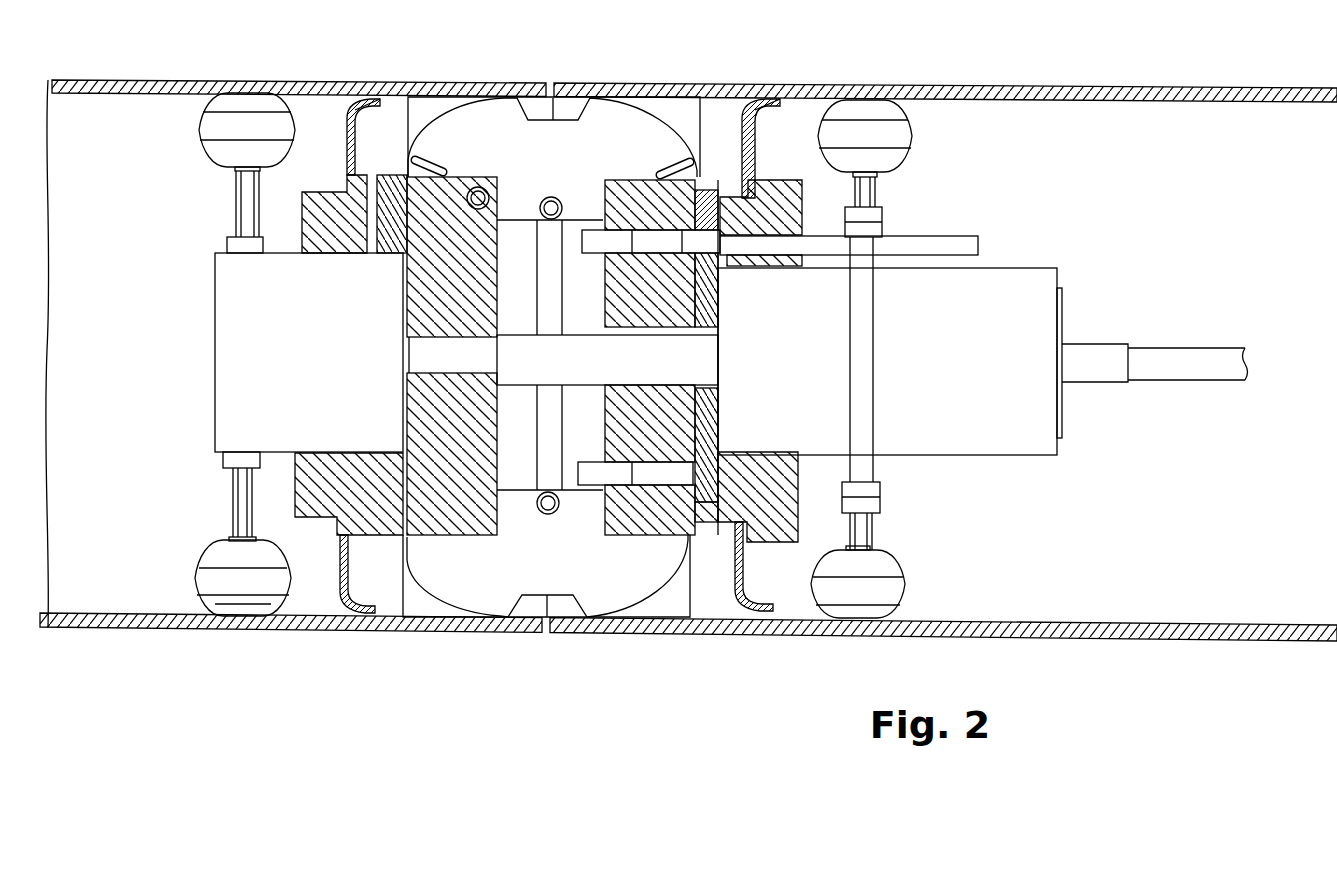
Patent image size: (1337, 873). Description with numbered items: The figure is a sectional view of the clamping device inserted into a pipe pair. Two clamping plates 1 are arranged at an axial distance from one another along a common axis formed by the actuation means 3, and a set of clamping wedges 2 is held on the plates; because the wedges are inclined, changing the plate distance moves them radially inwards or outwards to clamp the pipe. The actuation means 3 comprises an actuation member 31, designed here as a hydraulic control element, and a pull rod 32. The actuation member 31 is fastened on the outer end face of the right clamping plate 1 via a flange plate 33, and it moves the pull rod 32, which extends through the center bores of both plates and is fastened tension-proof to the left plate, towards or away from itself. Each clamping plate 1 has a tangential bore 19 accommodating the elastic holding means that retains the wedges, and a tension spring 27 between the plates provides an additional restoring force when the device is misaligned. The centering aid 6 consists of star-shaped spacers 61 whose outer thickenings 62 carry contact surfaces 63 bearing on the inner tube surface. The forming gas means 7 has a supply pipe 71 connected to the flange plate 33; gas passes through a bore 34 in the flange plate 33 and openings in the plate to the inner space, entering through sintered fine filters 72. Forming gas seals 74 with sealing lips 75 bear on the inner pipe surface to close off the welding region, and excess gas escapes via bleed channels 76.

The clamping plate 1 is at (470, 520).
The clamping wedge 2 is at (433, 100).
The actuation means 3 is at (781, 370).
The centering aid 6 is at (200, 405).
The forming gas means 7 is at (712, 245).
The bore 19 is at (478, 187).
The tension spring 27 is at (537, 425).
The actuation member 31 is at (1035, 268).
The pull rod 32 is at (511, 368).
The flange plate 33 is at (707, 415).
The bore 34 is at (707, 257).
The spacer 61 is at (240, 500).
The thickening 62 is at (208, 578).
The contact surface 63 is at (232, 600).
The supply pipe 71 is at (960, 245).
The sintered fine filter 72 is at (590, 240).
The forming gas seal 74 is at (347, 100).
The sealing lip 75 is at (382, 100).
The bleed channel 76 is at (375, 195).